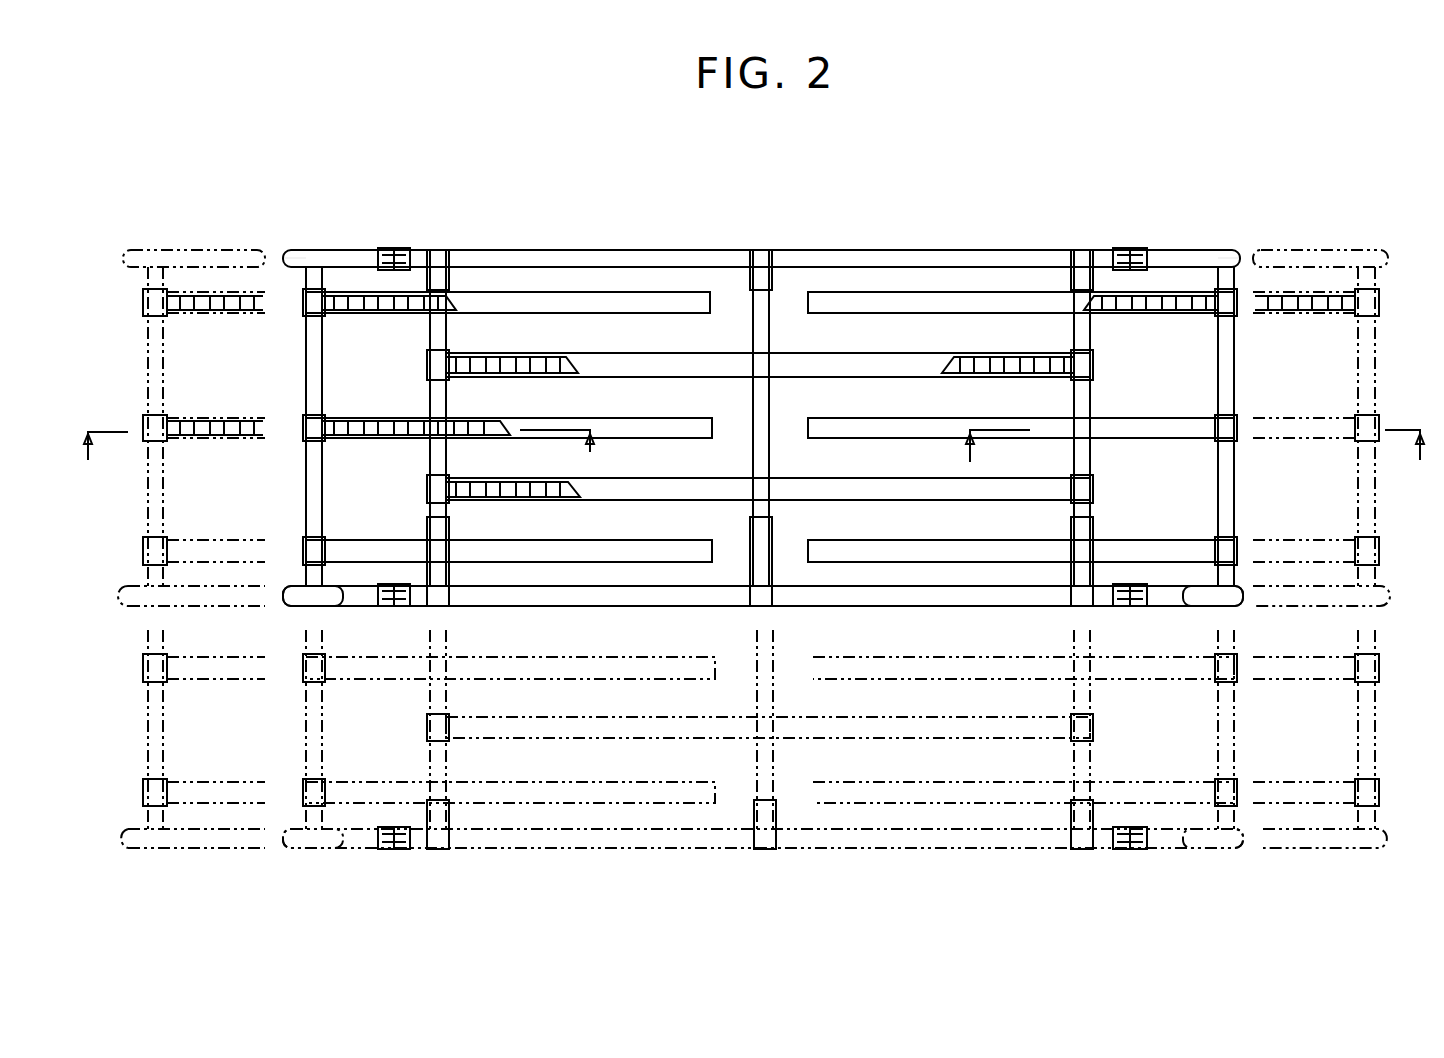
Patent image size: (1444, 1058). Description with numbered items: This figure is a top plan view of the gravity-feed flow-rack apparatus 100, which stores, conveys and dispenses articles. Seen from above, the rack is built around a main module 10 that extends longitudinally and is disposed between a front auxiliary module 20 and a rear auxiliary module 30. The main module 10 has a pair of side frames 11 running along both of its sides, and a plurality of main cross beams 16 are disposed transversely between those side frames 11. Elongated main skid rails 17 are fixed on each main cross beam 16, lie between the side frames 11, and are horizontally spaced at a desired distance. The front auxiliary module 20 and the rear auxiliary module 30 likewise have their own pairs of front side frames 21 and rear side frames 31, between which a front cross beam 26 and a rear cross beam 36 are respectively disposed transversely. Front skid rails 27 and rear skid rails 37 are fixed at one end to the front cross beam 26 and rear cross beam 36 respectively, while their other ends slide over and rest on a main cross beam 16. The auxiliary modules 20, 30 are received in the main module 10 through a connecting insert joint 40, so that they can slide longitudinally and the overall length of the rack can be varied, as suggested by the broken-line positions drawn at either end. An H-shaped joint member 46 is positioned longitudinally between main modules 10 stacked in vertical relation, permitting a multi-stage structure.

The gravity-feed flow-rack apparatus 100 is at (876, 224).
The main module 10 is at (974, 250).
The side frame 11 is at (996, 848).
The joint member 46 is at (734, 250).
The front auxiliary module 20 is at (1188, 248).
The rear auxiliary module 30 is at (184, 250).
The front side frame 21 is at (1186, 596).
The rear side frame 31 is at (356, 598).
The rear skid rail 37 is at (213, 314).
The front skid rail 27 is at (1150, 312).
The rear cross beam 36 is at (166, 492).
The front cross beam 26 is at (1376, 392).
The main skid rail 17 is at (708, 362).
The main cross beam 16 is at (442, 452).
The connecting insert joint 40 is at (395, 602).